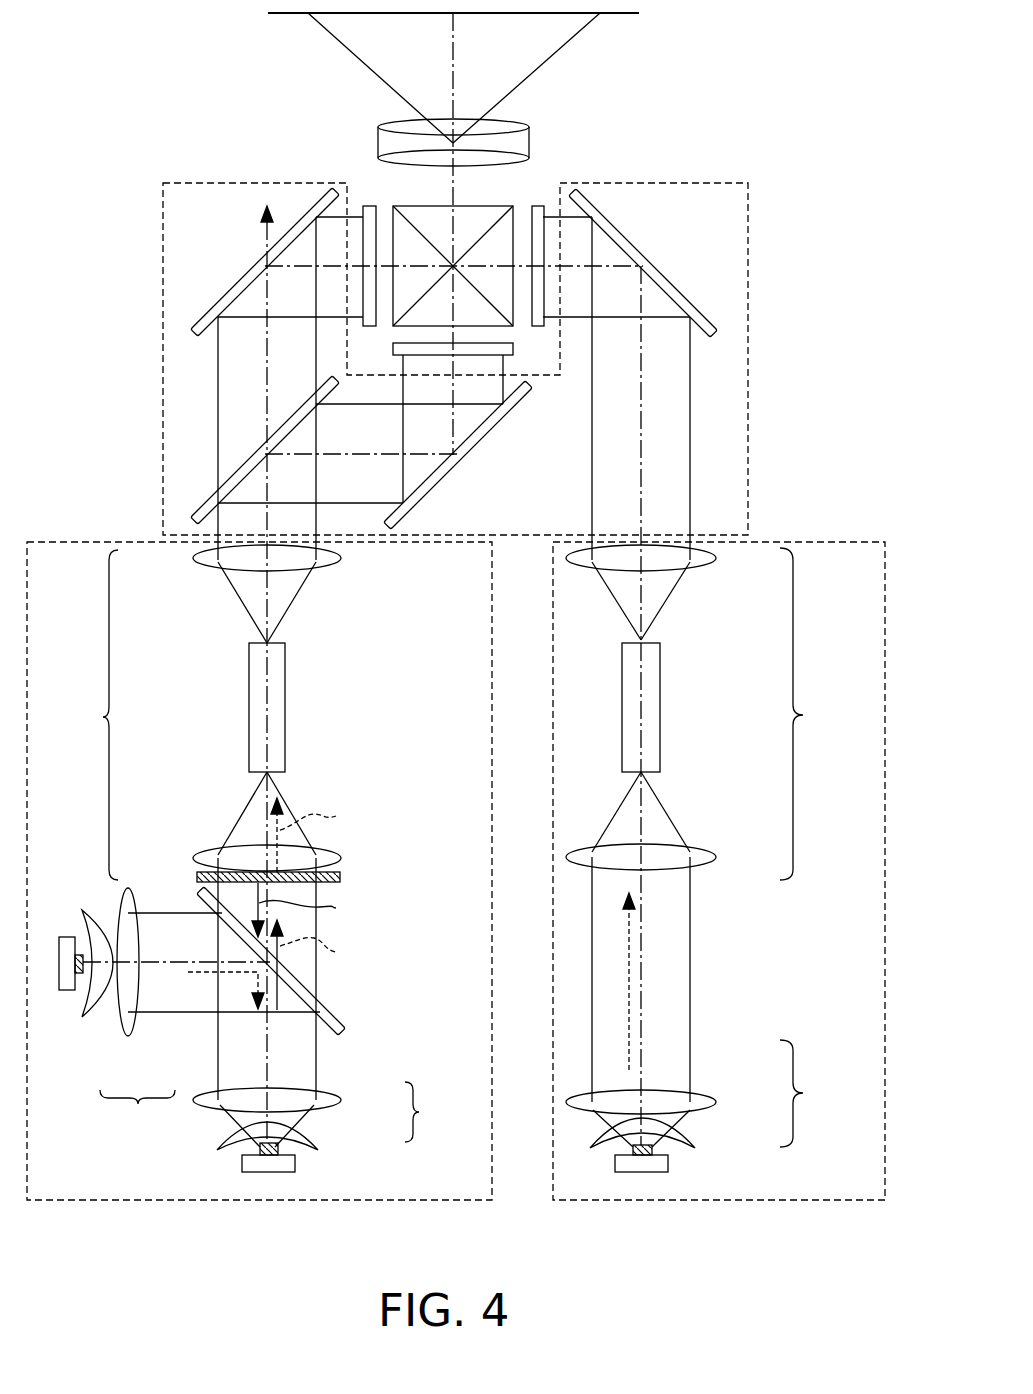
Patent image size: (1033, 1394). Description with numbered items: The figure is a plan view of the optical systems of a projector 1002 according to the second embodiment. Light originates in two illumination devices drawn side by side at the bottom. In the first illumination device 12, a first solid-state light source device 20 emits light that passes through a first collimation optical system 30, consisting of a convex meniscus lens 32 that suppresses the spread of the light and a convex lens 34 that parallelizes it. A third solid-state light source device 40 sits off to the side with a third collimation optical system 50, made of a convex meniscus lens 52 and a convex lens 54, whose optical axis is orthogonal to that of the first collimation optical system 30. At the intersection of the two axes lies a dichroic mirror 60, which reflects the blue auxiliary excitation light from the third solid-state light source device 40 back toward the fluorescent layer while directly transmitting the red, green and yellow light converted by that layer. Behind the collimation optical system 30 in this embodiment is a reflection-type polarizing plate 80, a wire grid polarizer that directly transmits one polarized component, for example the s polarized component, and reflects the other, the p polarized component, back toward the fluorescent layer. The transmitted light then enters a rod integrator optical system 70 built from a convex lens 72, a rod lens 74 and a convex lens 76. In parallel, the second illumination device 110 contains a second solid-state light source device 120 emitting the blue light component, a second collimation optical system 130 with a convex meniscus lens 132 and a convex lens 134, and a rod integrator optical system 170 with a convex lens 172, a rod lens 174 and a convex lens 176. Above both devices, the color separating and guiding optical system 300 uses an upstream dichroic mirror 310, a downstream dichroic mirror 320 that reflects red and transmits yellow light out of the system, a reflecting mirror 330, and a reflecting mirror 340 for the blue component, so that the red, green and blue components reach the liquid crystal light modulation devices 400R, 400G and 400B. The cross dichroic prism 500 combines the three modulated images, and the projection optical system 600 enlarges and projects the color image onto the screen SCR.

The projector 1002 is at (832, 30).
The screen SCR is at (626, 15).
The projection optical system 600 is at (378, 140).
The cross dichroic prism 500 is at (478, 204).
The liquid crystal light modulation device 400R is at (369, 204).
The liquid crystal light modulation device 400G is at (516, 350).
The liquid crystal light modulation device 400B is at (538, 206).
The color separating and guiding optical system 300 is at (162, 372).
The dichroic mirror 310 is at (195, 514).
The dichroic mirror 320 is at (195, 324).
The reflecting mirror 330 is at (445, 478).
The reflecting mirror 340 is at (712, 318).
The first illumination device 12 is at (153, 1200).
The rod integrator optical system 70 is at (204, 712).
The convex lens 72 is at (194, 857).
The rod lens 74 is at (249, 690).
The convex lens 76 is at (194, 558).
The reflection-type polarizing plate 80 is at (341, 877).
The dichroic mirror 60 is at (346, 1018).
The first solid-state light source device 20 is at (231, 1163).
The first collimation optical system 30 is at (324, 1114).
The convex meniscus lens 32 is at (320, 1143).
The convex lens 34 is at (341, 1100).
The third solid-state light source device 40 is at (70, 995).
The third collimation optical system 50 is at (129, 1013).
The convex meniscus lens 52 is at (92, 1012).
The convex lens 54 is at (133, 1036).
The second illumination device 110 is at (683, 1200).
The second solid-state light source device 120 is at (680, 1160).
The second collimation optical system 130 is at (715, 1096).
The convex meniscus lens 132 is at (690, 1142).
The convex lens 134 is at (716, 1100).
The rod integrator optical system 170 is at (715, 712).
The convex lens 172 is at (716, 859).
The rod lens 174 is at (660, 687).
The convex lens 176 is at (716, 560).